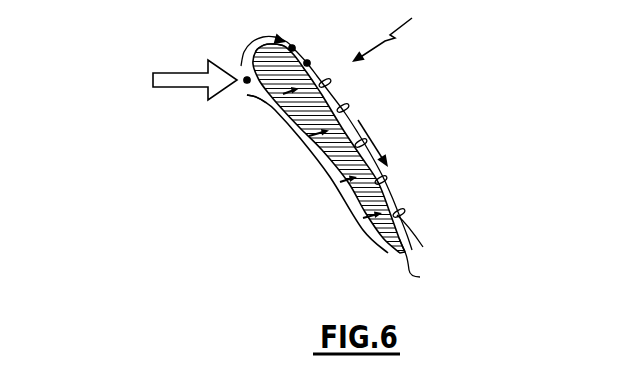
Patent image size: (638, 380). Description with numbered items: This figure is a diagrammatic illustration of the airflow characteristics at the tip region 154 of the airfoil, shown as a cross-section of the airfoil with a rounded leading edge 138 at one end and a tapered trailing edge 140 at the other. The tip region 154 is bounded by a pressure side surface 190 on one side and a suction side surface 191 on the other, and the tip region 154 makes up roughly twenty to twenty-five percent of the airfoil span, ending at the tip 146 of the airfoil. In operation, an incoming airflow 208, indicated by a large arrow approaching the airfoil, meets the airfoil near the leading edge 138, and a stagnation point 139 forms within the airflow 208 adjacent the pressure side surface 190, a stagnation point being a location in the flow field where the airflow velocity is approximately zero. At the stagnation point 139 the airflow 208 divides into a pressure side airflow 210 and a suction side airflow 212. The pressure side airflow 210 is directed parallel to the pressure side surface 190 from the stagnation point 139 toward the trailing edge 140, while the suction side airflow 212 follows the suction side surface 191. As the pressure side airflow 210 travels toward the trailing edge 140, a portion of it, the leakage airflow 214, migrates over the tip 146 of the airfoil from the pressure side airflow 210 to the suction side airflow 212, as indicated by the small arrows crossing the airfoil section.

The leading edge 138 is at (243, 62).
The stagnation point 139 is at (245, 84).
The trailing edge 140 is at (429, 265).
The tip 146 is at (349, 107).
The tip region 154 is at (402, 87).
The pressure side surface 190 is at (287, 122).
The suction side surface 191 is at (333, 88).
The airflow 208 is at (177, 73).
The pressure side airflow 210 is at (246, 97).
The suction side airflow 212 is at (264, 37).
The leakage airflow 214 is at (337, 181).